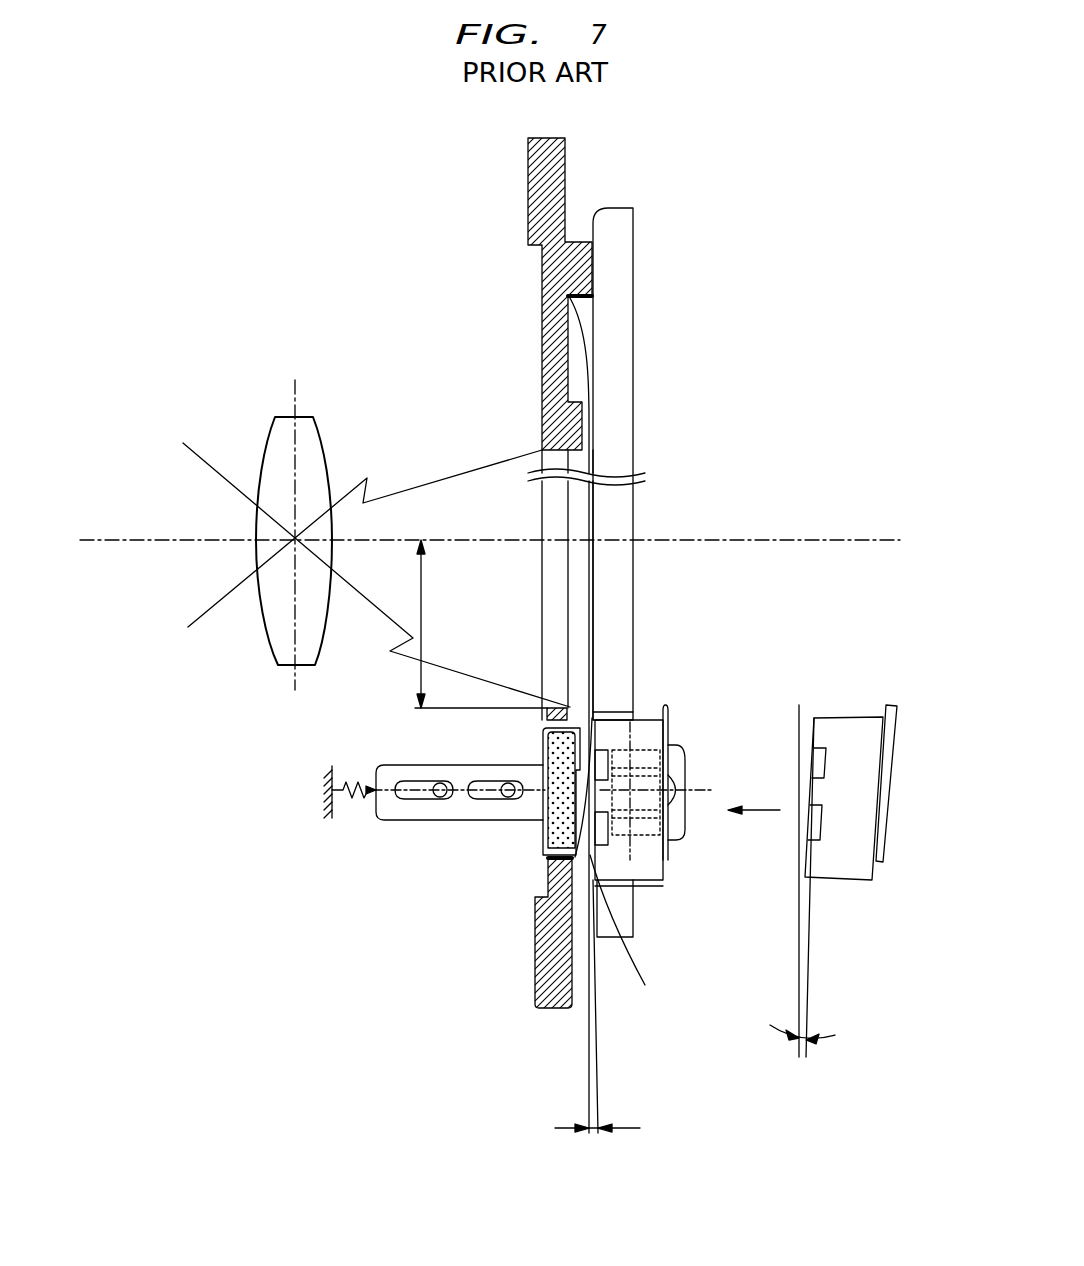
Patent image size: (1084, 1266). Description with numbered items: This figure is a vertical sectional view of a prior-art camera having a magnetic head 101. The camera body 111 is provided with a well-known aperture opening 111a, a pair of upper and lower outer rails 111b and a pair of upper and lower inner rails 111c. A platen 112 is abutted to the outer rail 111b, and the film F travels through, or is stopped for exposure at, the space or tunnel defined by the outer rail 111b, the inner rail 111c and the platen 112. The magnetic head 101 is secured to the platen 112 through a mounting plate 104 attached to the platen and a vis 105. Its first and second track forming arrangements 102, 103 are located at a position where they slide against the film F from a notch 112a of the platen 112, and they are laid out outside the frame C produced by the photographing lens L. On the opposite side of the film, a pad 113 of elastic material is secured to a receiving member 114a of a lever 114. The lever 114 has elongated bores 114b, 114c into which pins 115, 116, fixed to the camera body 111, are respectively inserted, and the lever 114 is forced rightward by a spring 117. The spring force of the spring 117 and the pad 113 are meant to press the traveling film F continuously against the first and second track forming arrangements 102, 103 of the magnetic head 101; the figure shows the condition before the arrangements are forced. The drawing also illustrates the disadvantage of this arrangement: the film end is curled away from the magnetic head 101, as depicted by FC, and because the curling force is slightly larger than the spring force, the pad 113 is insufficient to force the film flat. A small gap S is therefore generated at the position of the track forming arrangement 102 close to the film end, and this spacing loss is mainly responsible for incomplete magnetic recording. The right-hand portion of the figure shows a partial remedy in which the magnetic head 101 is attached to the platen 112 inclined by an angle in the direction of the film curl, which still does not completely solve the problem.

The magnetic head 101 is at (645, 862).
The first track forming arrangement 102 is at (598, 833).
The second track forming arrangement 103 is at (612, 755).
The mounting plate 104 is at (668, 728).
The vis 105 is at (683, 768).
The camera body 111 is at (553, 176).
The aperture opening 111a is at (552, 630).
The outer rail 111b is at (573, 275).
The inner rail 111c is at (543, 425).
The platen 112 is at (612, 254).
The notch 112a is at (617, 712).
The pad 113 is at (560, 870).
The lever 114 is at (440, 812).
The receiving member 114a is at (545, 832).
The elongated bore 114b is at (490, 800).
The elongated bore 114c is at (398, 796).
The pin 115 is at (503, 783).
The pin 116 is at (438, 783).
The spring 117 is at (360, 782).
The film F is at (590, 605).
The film curl FC is at (580, 316).
The photographing lens L is at (308, 434).
The optical axis O is at (432, 535).
The frame C is at (481, 624).
The gap S is at (597, 1112).